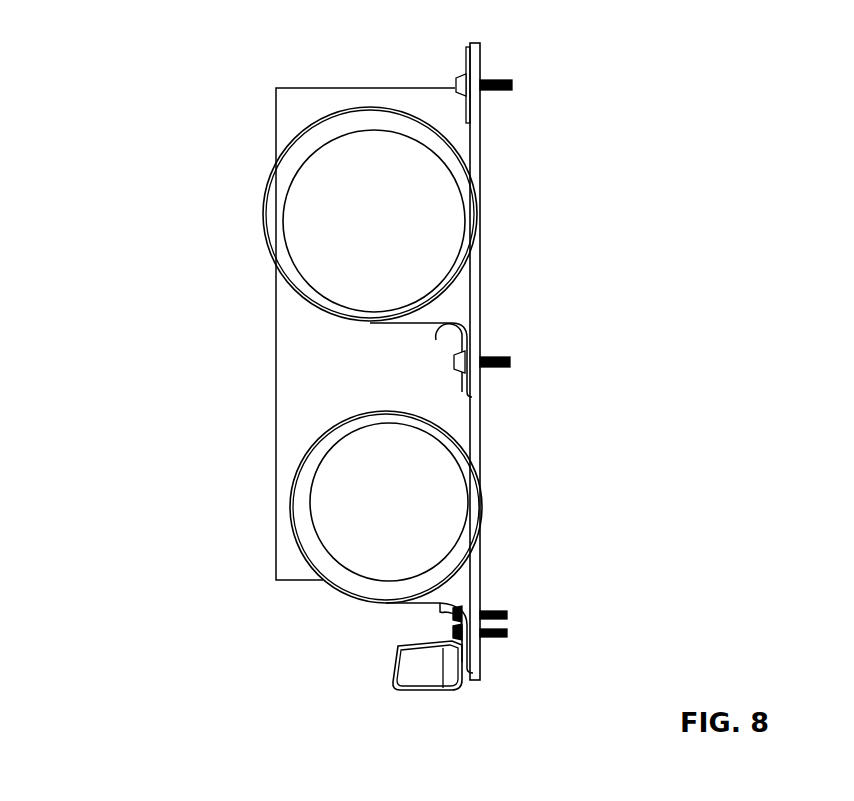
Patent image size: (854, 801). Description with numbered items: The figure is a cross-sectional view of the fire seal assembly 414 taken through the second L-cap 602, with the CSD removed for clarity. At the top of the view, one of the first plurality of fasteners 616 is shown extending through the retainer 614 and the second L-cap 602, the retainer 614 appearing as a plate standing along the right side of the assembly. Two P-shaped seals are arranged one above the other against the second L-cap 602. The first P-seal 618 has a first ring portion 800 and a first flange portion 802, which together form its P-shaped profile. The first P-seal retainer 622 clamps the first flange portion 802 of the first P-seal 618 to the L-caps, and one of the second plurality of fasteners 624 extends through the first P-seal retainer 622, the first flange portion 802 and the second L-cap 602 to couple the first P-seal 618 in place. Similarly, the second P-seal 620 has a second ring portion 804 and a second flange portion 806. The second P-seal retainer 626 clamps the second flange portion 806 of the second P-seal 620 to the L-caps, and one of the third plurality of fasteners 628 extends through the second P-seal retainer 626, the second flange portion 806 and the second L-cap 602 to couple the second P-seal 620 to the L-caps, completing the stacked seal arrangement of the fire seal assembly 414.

The fire seal assembly 414 is at (188, 58).
The second L-cap 602 is at (320, 100).
The retainer 614 is at (467, 48).
The first plurality of fasteners 616 is at (455, 85).
The first P-seal 618 is at (300, 148).
The first ring portion 800 is at (265, 218).
The first flange portion 802 is at (460, 311).
The first P-seal retainer 622 is at (450, 340).
The second plurality of fasteners 624 is at (450, 370).
The second P-seal 620 is at (313, 475).
The second ring portion 804 is at (300, 519).
The second flange portion 806 is at (458, 596).
The second P-seal retainer 626 is at (440, 614).
The third plurality of fasteners 628 is at (398, 648).